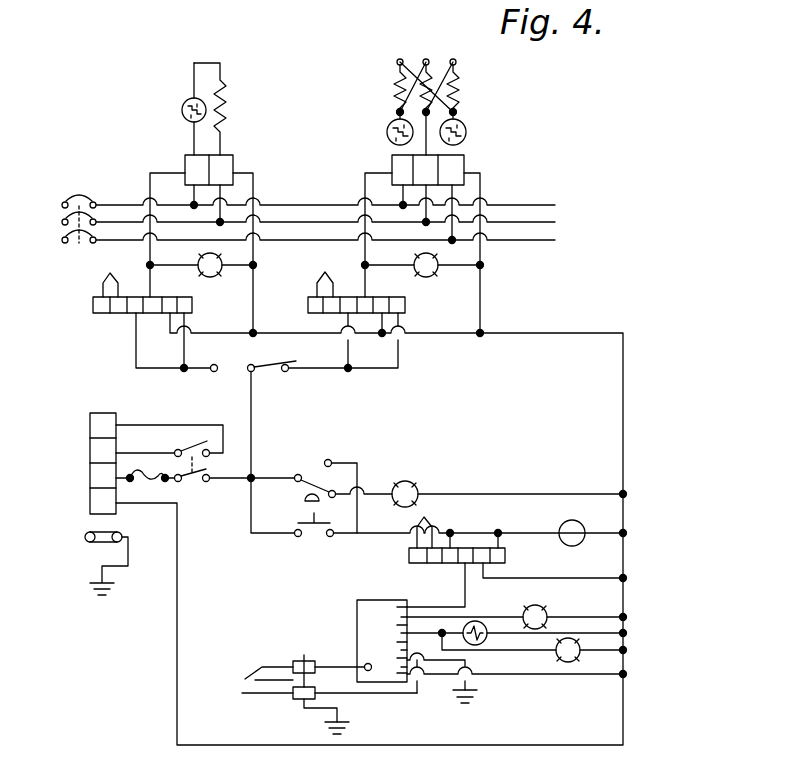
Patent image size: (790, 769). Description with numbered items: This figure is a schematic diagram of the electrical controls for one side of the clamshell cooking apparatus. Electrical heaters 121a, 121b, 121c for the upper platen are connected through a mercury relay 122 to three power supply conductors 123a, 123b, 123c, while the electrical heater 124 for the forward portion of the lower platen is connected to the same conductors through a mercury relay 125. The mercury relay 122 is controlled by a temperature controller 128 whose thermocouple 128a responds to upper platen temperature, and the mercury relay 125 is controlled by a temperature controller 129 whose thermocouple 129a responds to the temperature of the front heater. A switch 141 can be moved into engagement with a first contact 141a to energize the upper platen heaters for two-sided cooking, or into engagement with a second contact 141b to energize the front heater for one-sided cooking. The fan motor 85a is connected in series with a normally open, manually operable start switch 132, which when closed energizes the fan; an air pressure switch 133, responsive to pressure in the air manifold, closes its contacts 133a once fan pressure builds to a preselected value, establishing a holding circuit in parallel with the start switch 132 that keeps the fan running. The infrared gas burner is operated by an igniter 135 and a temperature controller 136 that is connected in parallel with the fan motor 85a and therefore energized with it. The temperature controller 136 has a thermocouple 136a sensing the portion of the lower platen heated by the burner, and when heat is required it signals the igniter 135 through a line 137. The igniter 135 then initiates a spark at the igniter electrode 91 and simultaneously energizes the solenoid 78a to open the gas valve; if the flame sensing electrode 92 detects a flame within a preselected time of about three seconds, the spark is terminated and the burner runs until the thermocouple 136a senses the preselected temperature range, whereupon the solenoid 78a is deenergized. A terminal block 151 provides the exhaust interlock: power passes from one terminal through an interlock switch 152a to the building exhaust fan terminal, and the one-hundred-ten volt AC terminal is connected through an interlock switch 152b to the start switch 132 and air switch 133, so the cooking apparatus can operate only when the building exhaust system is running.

The solenoid 78a is at (487, 650).
The fan motor 85a is at (575, 521).
The igniter electrode 91 is at (272, 663).
The flame sensing electrode 92 is at (262, 695).
The electrical heater 121a is at (398, 95).
The electrical heater 121b is at (440, 97).
The electrical heater 121c is at (458, 100).
The mercury relay 122 is at (470, 163).
The power supply conductor 123a is at (137, 203).
The power supply conductor 123b is at (113, 221).
The power supply conductor 123c is at (110, 242).
The electrical heater 124 is at (222, 100).
The mercury relay 125 is at (225, 163).
The temperature controller 128 is at (405, 306).
The thermocouple 128a is at (321, 287).
The temperature controller 129 is at (190, 306).
The thermocouple 129a is at (100, 288).
The start switch 132 is at (300, 536).
The air pressure switch 133 is at (303, 473).
The contacts 133a is at (332, 460).
The igniter 135 is at (357, 618).
The temperature controller 136 is at (500, 560).
The thermocouple 136a is at (430, 527).
The line 137 is at (465, 585).
The switch 141 is at (263, 373).
The first contact 141a is at (290, 372).
The second contact 141b is at (214, 373).
The terminal block 151 is at (105, 412).
The interlock switch 152a is at (175, 446).
The interlock switch 152b is at (186, 482).